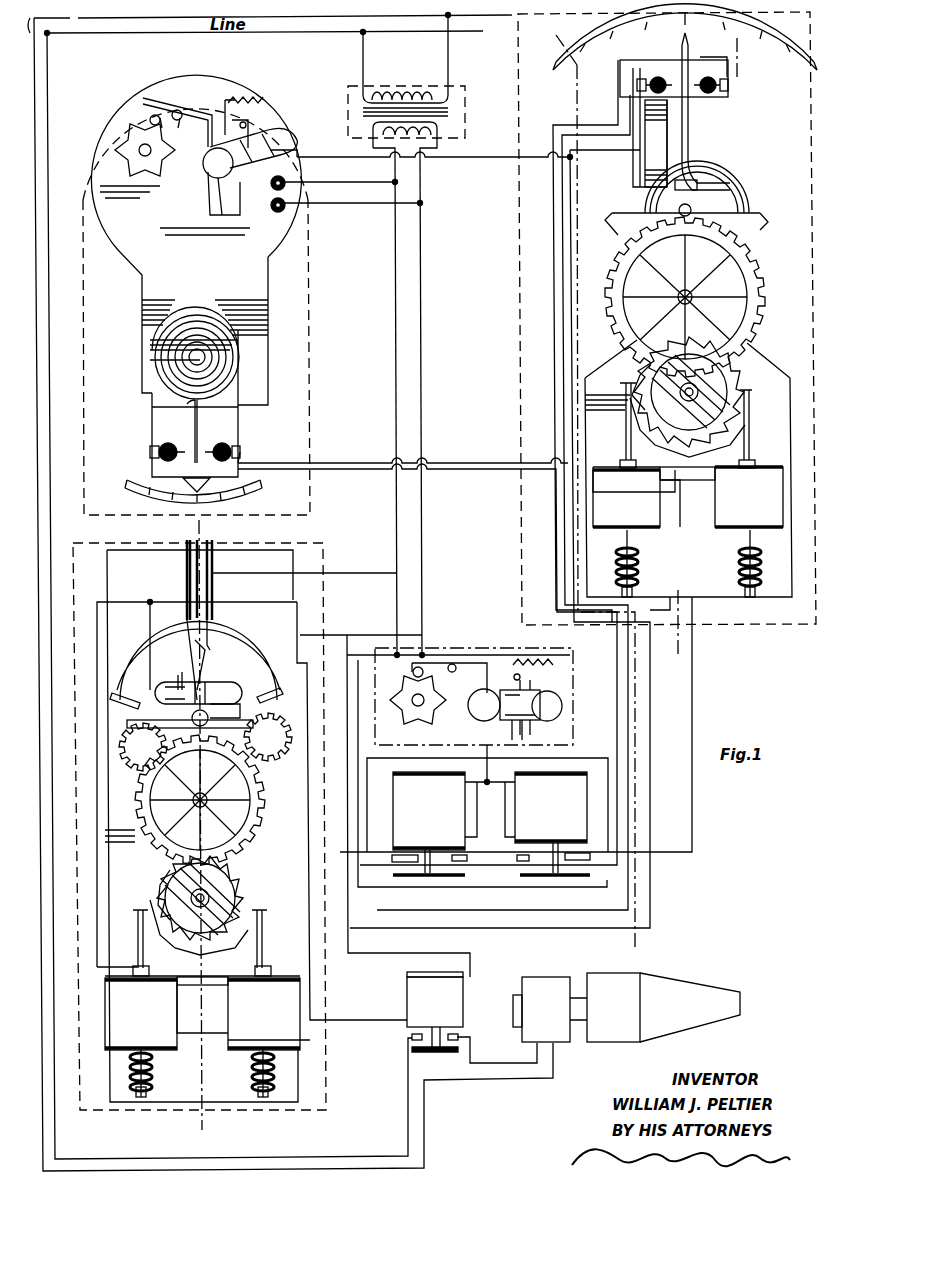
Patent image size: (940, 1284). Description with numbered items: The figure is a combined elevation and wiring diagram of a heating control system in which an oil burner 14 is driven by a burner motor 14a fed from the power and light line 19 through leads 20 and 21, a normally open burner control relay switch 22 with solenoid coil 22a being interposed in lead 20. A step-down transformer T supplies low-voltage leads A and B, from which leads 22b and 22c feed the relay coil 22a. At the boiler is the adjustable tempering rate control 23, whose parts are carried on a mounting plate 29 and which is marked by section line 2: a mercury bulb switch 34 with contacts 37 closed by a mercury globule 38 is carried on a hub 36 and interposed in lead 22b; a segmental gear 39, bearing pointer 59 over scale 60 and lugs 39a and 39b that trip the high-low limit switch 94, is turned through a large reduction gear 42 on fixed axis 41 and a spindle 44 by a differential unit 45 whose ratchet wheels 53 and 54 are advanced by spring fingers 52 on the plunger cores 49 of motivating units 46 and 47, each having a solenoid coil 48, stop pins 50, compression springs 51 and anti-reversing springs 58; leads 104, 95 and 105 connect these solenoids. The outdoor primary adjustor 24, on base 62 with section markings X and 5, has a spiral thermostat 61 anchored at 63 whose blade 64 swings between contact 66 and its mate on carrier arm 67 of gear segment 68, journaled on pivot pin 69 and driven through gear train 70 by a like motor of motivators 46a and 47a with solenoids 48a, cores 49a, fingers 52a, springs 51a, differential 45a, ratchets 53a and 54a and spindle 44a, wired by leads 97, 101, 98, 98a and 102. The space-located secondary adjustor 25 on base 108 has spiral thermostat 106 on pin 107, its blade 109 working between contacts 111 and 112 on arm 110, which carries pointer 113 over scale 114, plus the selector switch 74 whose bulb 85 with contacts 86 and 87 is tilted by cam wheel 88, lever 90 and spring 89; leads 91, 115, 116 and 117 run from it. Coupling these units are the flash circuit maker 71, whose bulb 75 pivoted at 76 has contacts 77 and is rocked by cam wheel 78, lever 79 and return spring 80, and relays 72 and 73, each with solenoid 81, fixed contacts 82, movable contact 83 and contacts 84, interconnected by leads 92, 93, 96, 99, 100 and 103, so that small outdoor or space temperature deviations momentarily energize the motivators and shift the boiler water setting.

The power and light line 19 is at (98, 30).
The lead 20 is at (50, 433).
The lead 21 is at (37, 400).
The step-down transformer T is at (452, 105).
The low voltage supply lead A is at (396, 312).
The low voltage supply lead B is at (420, 308).
The lead 91 is at (607, 150).
The secondary adjustor 25 is at (312, 322).
The mounting base 108 is at (196, 240).
The lead 115 is at (250, 185).
The lead 116 is at (207, 215).
The lead 117 is at (343, 475).
The cam wheel 88 is at (145, 150).
The intermediately pivoted lever 90 is at (177, 122).
The return tension spring 89 is at (240, 100).
The motor-driven selector switch 74 is at (213, 95).
The mercury bulb switch 85 is at (290, 130).
The pair of contacts 86 is at (210, 175).
The pair of contacts 87 is at (300, 150).
The pin 107 is at (200, 355).
The spiral thermostat 106 is at (230, 372).
The arm 110 is at (238, 418).
The switch blade 109 is at (205, 437).
The contact 111 is at (170, 438).
The contact 112 is at (240, 452).
The pointer 113 is at (213, 485).
The temperature calibrated scale 114 is at (268, 492).
The primary adjustor 24 is at (512, 378).
The section line X is at (591, 496).
The section line 5 is at (722, 52).
The blade 64 is at (690, 113).
The conductor 98a is at (712, 52).
The lead 92 is at (632, 100).
The switch contact 66 is at (725, 90).
The switch contact carrier arm 67 is at (652, 127).
The anchor point 63 is at (712, 165).
The thermostat 61 is at (736, 190).
The pivot pin 69 is at (678, 208).
The gear segment 68 is at (765, 238).
The train of gears 70 is at (625, 305).
The mounting base 62 is at (760, 352).
The ratchet wheel 53a is at (690, 392).
The ratchet wheel 54a is at (689, 392).
The spindle 44a is at (656, 377).
The differential unit 45a is at (625, 395).
The spring finger 52a is at (626, 420).
The plunger-like core 49a is at (756, 448).
The lead 97 is at (575, 205).
The short lead 101 is at (670, 478).
The motivating unit 46a is at (626, 498).
The motivating unit 47a is at (749, 497).
The solenoid coil 48a is at (715, 520).
The compression spring 51a is at (632, 560).
The stop pins 50 is at (748, 592).
The lead 102 is at (645, 580).
The lead 98 is at (692, 600).
The flash circuit maker 71 is at (470, 640).
The lead 22c is at (350, 632).
The cam wheel 78 is at (418, 700).
The intermediately pivoted lever 79 is at (449, 680).
The mercury bulb switch 75 is at (563, 706).
The pivot 76 is at (539, 670).
The pair of contacts 77 is at (505, 722).
The return spring 80 is at (545, 655).
The lead 93 is at (479, 782).
The lead 96 is at (489, 803).
The lead 103 is at (372, 822).
The electro-magnetic relay switch 72 is at (429, 811).
The electro-magnetic relay switch 73 is at (551, 807).
The solenoid 81 is at (543, 804).
The lead 100 is at (470, 835).
The fixed contacts 82 is at (392, 857).
The pair of contacts 84 is at (491, 858).
The short lead 99 is at (478, 878).
The movable contact 83 is at (392, 880).
The adjustable tempering rate control 23 is at (140, 1115).
The section line 2 is at (190, 537).
The mounting plate 29 is at (255, 1128).
The lead 104 is at (92, 640).
The lead 95 is at (330, 1068).
The high-low limit control switch 94 is at (185, 565).
The lead 22b is at (150, 601).
The calibrated scale 60 is at (218, 630).
The indicating pointer 59 is at (190, 655).
The contacts 37 is at (170, 685).
The mercury bulb switch 34 is at (198, 698).
The hub 36 is at (190, 718).
The switch-actuating lug 39a is at (282, 690).
The switch-actuating lug 39b is at (112, 695).
The globule of mercury 38 is at (138, 748).
The segmental gear 39 is at (270, 737).
The fixed axis 41 is at (218, 800).
The large reduction gear 42 is at (120, 846).
The spindle 44 is at (175, 894).
The differential unit 45 is at (145, 890).
The ratchet wheel 53 is at (202, 898).
The ratchet wheel 54 is at (200, 898).
The anti-reversing springs 58 is at (200, 938).
The spring fingers 52 is at (138, 920).
The plunger-like core 49 is at (278, 954).
The motivating unit 46 is at (141, 1014).
The motivating unit 47 is at (264, 1014).
The solenoid coil 48 is at (203, 1005).
The lead 105 is at (270, 1025).
The compression springs 51 is at (152, 1068).
The burner control relay switch 22 is at (472, 1017).
The solenoid coil 22a is at (458, 1000).
The burner motor 14a is at (550, 1009).
The oil burner 14 is at (612, 1045).